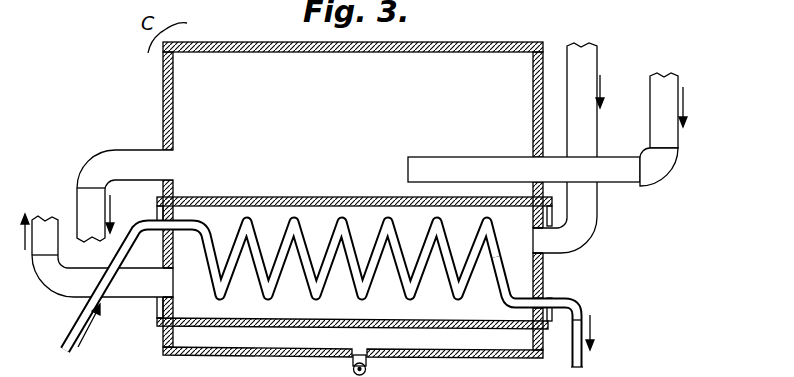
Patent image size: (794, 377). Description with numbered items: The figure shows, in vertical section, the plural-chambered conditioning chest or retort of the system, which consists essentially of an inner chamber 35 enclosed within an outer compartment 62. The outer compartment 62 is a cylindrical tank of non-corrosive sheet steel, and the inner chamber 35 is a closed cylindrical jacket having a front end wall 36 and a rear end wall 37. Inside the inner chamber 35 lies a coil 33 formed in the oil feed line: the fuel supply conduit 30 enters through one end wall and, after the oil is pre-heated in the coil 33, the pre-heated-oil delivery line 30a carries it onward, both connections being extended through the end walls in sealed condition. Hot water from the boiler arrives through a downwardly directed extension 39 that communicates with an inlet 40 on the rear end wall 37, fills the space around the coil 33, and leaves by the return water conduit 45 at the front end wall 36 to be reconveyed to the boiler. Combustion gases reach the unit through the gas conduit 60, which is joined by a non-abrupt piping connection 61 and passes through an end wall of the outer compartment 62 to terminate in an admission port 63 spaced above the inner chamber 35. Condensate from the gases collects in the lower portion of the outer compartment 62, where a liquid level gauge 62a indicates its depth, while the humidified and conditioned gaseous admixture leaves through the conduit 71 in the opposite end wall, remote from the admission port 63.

The outer compartment 62 is at (433, 57).
The liquid level gauge 62a is at (352, 369).
The inner chamber 35 is at (283, 197).
The conduit for conditioned gaseous admixture 71 is at (134, 150).
The fuel supply conduit 30 is at (78, 310).
The front end wall 36 is at (163, 257).
The return water conduit 45 is at (130, 288).
The coil 33 is at (362, 291).
The rear end wall 37 is at (548, 290).
The pre-heated-oil delivery line 30a is at (583, 352).
The extension of hot water conduit 39 is at (597, 58).
The inlet 40 is at (553, 245).
The admission port 63 is at (449, 160).
The gas conduit 60 is at (650, 94).
The piping connection 61 is at (662, 168).